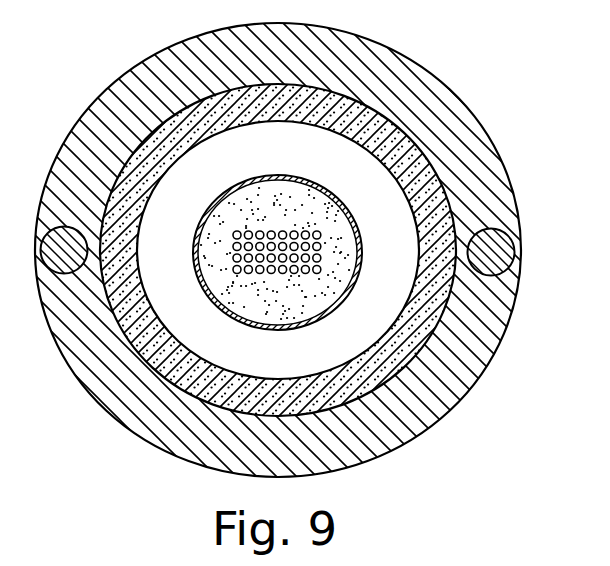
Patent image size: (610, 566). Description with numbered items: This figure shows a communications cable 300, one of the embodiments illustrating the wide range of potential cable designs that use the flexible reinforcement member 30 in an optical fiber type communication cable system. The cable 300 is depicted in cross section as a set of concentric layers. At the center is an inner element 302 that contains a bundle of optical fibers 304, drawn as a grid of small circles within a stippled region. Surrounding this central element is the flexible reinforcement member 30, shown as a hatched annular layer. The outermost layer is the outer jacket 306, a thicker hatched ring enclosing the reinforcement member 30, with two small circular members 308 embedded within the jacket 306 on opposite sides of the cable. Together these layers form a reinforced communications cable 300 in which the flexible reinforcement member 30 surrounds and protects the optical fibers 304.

The optical fiber cable assembly 300 is at (309, 250).
The flexible reinforcement member 30 is at (391, 124).
The inner tube 302 is at (285, 175).
The optical fibers 304 is at (264, 232).
The outer jacket 306 is at (493, 180).
The strength members 308 is at (517, 250).